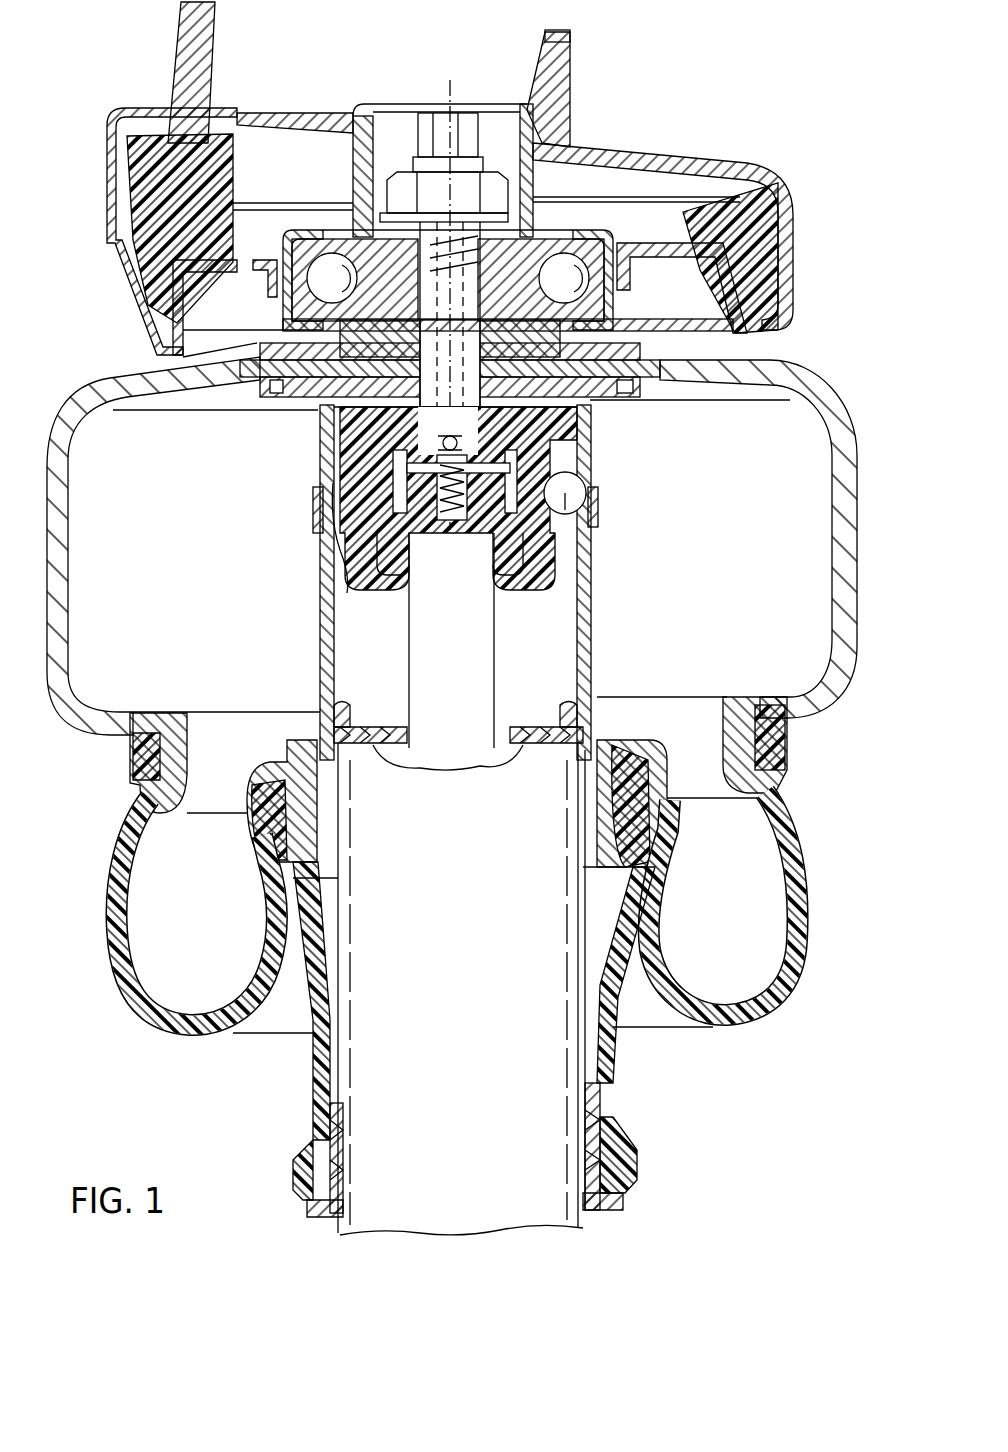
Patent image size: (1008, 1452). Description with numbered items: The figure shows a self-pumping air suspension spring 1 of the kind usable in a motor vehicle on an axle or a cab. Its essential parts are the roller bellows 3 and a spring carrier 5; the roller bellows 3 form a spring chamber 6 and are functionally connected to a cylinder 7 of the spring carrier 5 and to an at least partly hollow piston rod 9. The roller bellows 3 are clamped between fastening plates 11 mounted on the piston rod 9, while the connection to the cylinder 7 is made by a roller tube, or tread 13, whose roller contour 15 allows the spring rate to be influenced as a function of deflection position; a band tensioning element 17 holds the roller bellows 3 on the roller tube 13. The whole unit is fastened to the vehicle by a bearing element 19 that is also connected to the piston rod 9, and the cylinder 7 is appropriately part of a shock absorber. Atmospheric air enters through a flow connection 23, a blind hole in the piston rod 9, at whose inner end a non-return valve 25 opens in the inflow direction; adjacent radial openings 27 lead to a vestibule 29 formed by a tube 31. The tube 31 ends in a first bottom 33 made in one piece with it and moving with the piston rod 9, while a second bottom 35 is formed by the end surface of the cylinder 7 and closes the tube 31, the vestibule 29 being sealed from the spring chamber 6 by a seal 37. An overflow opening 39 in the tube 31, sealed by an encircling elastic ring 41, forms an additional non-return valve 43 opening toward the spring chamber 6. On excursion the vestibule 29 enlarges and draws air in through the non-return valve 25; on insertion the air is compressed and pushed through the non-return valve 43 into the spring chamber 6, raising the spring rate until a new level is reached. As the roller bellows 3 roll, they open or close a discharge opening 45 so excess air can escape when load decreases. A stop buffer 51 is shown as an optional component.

The air suspension spring 1 is at (792, 1008).
The roller bellows 3 is at (802, 735).
The spring carrier 5 is at (629, 1224).
The spring chamber 6 is at (792, 559).
The cylinder 7 is at (617, 1045).
The piston rod 9 is at (473, 665).
The fastening plates 11 is at (643, 358).
The tread, or track (roller tube) 13 is at (633, 1007).
The roller contour 15 is at (624, 1002).
The band tensioning element 17 is at (667, 797).
The bearing element 19 is at (753, 230).
The flow connection 23 is at (450, 106).
The non-return valve 25 is at (540, 437).
The radial openings 27 is at (545, 468).
The vestibule 29 is at (540, 624).
The tube 31 is at (590, 553).
The first bottom 33 is at (350, 402).
The second bottom 35 is at (556, 703).
The seal 37 is at (560, 705).
The overflow opening 39 is at (348, 595).
The elastic ring 41 is at (592, 495).
The non-return valve 43 is at (600, 522).
The discharge opening 45 is at (283, 932).
The stop buffer 51 is at (378, 570).